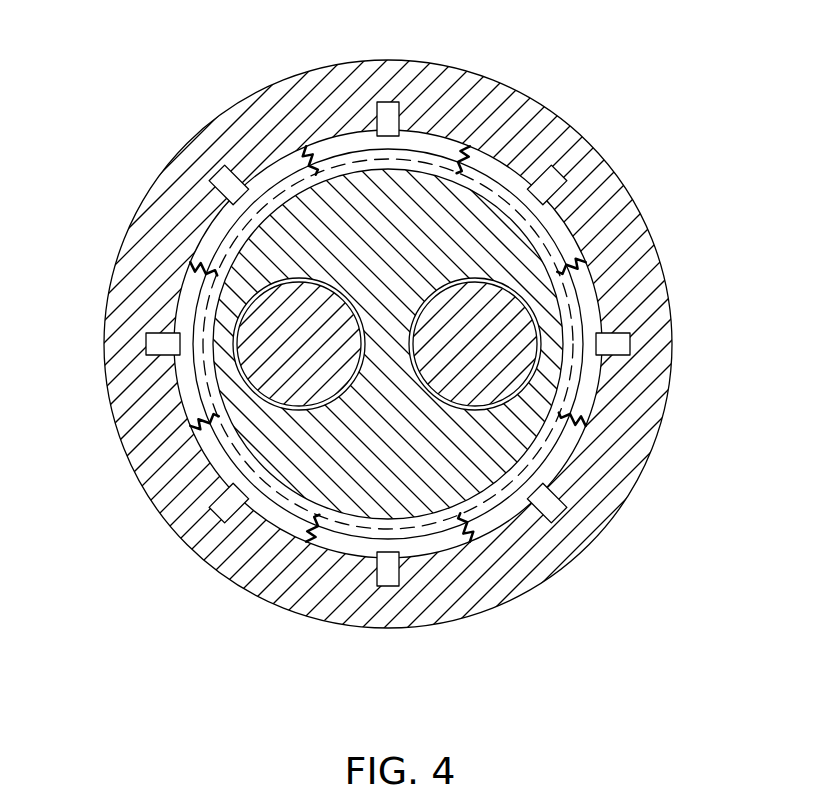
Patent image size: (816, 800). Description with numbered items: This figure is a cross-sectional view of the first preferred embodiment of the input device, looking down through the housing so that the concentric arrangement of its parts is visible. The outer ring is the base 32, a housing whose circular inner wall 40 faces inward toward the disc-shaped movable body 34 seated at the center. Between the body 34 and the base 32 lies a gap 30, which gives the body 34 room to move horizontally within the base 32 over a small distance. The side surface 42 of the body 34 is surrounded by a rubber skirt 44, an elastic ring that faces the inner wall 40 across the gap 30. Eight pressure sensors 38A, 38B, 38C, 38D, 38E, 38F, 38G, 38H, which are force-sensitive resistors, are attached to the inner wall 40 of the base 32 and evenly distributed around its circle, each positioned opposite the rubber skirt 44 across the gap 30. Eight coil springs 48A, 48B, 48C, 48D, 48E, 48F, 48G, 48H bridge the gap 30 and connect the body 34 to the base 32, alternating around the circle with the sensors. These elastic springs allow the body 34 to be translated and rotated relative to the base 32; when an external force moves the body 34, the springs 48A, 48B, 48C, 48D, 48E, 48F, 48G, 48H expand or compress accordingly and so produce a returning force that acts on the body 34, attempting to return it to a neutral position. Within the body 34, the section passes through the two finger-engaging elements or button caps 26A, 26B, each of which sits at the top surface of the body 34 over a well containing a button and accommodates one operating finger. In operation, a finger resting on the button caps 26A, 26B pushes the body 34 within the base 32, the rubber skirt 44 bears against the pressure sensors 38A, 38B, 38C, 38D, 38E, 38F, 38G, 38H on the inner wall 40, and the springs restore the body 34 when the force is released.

The gap 30 is at (273, 167).
The base 32 is at (228, 563).
The movable body 34 is at (525, 438).
The button cap 26A is at (248, 370).
The button cap 26B is at (513, 363).
The pressure sensor 38A is at (153, 343).
The pressure sensor 38B is at (213, 180).
The pressure sensor 38C is at (397, 112).
The pressure sensor 38D is at (563, 172).
The pressure sensor 38E is at (622, 349).
The pressure sensor 38F is at (560, 518).
The pressure sensor 38G is at (388, 585).
The pressure sensor 38H is at (205, 520).
The inner wall 40 is at (613, 313).
The side surface 42 is at (193, 317).
The rubber skirt 44 is at (425, 543).
The coil spring 48A is at (192, 262).
The coil spring 48B is at (308, 148).
The coil spring 48C is at (470, 147).
The coil spring 48D is at (592, 262).
The coil spring 48E is at (588, 422).
The coil spring 48F is at (472, 542).
The coil spring 48G is at (305, 542).
The coil spring 48H is at (195, 426).